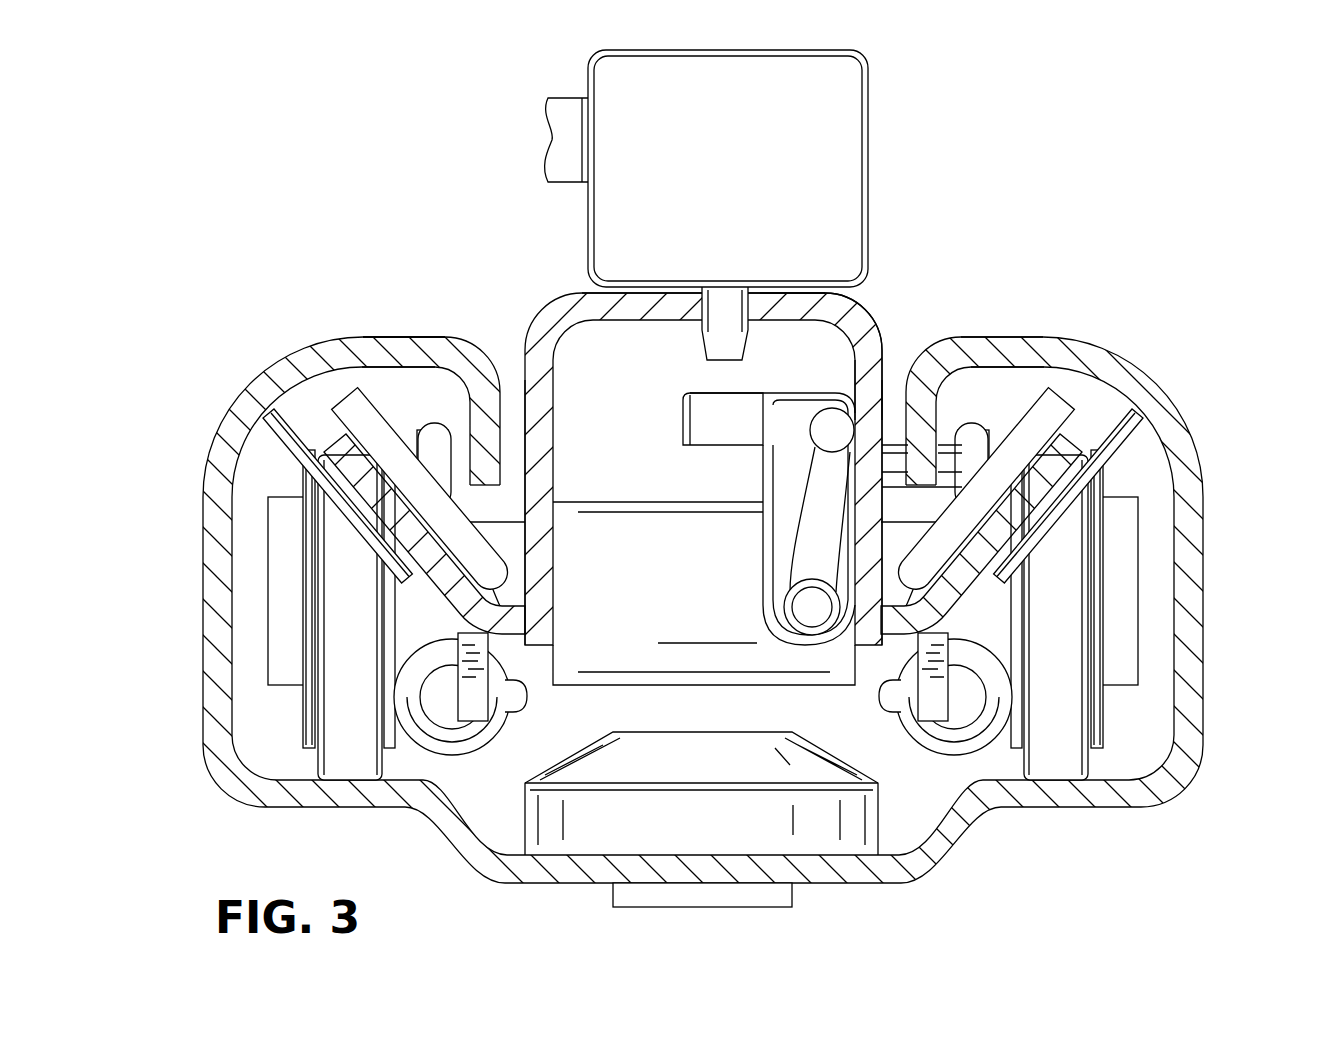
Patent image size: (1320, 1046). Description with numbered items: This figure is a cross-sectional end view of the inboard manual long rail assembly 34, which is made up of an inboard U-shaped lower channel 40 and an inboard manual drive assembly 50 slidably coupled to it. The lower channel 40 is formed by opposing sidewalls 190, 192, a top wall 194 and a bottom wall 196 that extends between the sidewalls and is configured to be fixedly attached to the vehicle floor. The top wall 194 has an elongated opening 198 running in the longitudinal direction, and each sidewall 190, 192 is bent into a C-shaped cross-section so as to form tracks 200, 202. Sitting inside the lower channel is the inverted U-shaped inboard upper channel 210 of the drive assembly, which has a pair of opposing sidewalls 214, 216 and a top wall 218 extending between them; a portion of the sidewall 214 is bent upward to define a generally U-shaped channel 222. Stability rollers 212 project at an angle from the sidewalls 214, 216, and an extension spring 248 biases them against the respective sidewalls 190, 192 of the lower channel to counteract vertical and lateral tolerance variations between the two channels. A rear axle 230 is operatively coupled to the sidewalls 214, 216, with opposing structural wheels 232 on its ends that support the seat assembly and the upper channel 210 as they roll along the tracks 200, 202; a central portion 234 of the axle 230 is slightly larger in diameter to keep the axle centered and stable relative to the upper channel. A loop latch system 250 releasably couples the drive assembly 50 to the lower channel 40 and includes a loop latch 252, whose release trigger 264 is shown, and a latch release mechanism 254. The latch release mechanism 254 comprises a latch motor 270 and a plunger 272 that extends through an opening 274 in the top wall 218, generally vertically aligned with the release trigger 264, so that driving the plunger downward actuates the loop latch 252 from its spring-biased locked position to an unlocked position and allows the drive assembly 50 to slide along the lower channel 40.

The inboard manual long rail assembly 34 is at (177, 283).
The inboard U-shaped lower channel 40 is at (902, 919).
The inboard manual drive assembly 50 is at (528, 302).
The sidewall 190 is at (200, 690).
The sidewall 192 is at (1205, 690).
The top wall 194 is at (386, 338).
The bottom wall 196 is at (820, 885).
The elongated opening 198 is at (901, 365).
The track 200 is at (262, 762).
The track 202 is at (1130, 762).
The inboard upper channel 210 is at (554, 298).
The stability rollers 212 is at (288, 455).
The sidewall 214 is at (522, 364).
The sidewall 216 is at (888, 353).
The top wall 218 is at (815, 303).
The U-shaped channel 222 is at (902, 596).
The rear axle 230 is at (505, 560).
The structural wheels 232 is at (345, 772).
The central portion 234 is at (590, 696).
The extension spring 248 is at (425, 777).
The loop latch system 250 is at (668, 413).
The loop latch 252 is at (760, 392).
The latch release mechanism 254 is at (881, 151).
The release trigger 264 is at (717, 392).
The latch motor 270 is at (540, 168).
The plunger 272 is at (700, 340).
The opening 274 is at (757, 326).